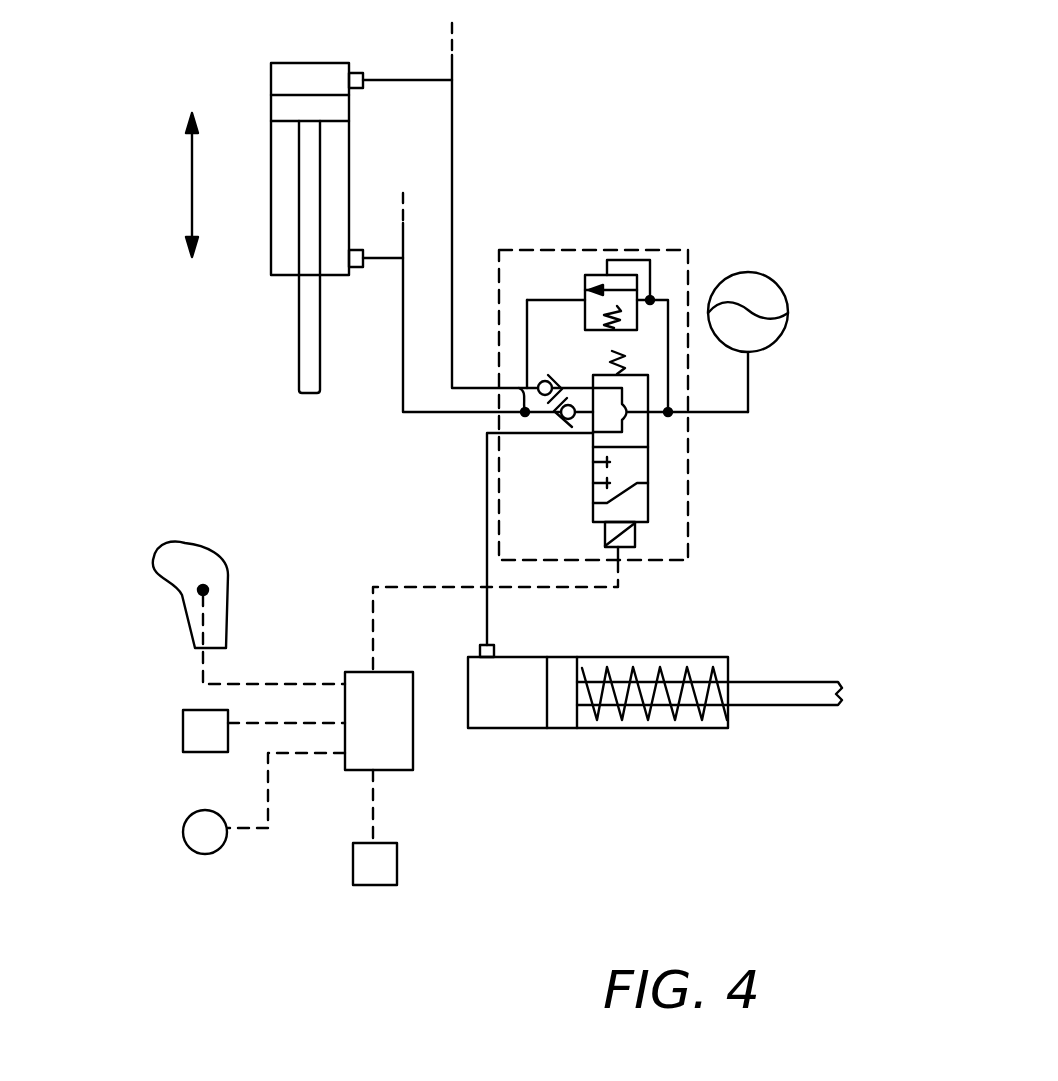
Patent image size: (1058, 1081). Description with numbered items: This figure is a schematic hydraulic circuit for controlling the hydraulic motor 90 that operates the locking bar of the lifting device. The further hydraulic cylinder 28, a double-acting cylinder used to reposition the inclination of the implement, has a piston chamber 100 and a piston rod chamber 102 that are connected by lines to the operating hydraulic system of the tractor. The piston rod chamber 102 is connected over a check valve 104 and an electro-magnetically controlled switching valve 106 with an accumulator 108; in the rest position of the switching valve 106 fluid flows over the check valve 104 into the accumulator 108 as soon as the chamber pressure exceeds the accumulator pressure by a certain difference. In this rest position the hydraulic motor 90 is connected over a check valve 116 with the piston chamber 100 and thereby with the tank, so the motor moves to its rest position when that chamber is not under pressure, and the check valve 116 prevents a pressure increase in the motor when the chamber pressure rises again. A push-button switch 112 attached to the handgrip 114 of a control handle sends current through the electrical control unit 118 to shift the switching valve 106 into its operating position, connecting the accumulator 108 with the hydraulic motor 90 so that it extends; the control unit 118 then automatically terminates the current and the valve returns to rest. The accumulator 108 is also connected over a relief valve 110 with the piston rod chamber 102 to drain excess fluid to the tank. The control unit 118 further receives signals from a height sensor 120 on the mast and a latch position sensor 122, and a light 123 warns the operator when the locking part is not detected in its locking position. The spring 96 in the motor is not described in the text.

The piston chamber 100 is at (285, 80).
The further hydraulic cylinder 28 is at (270, 177).
The piston rod chamber 102 is at (285, 230).
The relief valve 110 is at (592, 275).
The check valve 116 is at (548, 375).
The check valve 104 is at (556, 424).
The electro-magnetically controlled switching valve 106 is at (648, 463).
The accumulator 108 is at (772, 343).
The hydraulic motor 90 is at (643, 730).
The spring 96 is at (688, 675).
The handgrip 114 is at (227, 610).
The push-button switch 112 is at (199, 591).
The electrical control unit 118 is at (403, 770).
The latch position sensor 122 is at (183, 720).
The light 123 is at (205, 854).
The height sensor 120 is at (397, 866).